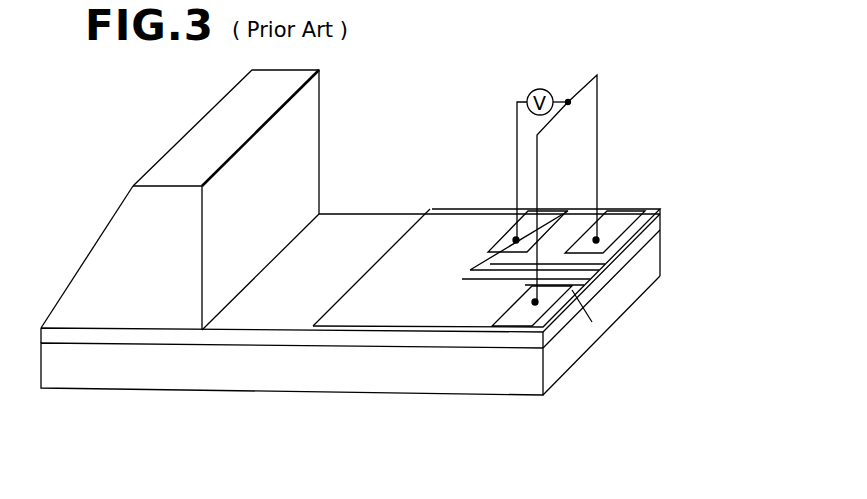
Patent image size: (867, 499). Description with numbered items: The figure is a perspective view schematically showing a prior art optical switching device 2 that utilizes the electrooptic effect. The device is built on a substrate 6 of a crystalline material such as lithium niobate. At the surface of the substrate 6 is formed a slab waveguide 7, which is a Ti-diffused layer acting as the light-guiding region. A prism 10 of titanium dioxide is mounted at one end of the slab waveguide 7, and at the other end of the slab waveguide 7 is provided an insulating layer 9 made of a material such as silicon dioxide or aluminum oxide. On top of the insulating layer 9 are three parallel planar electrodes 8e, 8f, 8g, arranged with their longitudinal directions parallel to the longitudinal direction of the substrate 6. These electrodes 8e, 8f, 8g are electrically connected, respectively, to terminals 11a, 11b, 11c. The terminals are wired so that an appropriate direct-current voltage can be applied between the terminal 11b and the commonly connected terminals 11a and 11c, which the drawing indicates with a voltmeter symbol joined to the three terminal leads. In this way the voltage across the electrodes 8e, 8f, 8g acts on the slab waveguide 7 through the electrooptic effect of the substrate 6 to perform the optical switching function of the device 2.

The optical switching device 2 is at (521, 432).
The substrate 6 is at (303, 383).
The slab waveguide 7 is at (250, 327).
The planar electrode 8e is at (580, 305).
The planar electrode 8f is at (592, 282).
The planar electrode 8g is at (600, 263).
The insulating layer 9 is at (476, 209).
The prism 10 is at (70, 285).
The terminal 11a is at (509, 311).
The terminal 11b is at (552, 211).
The terminal 11c is at (622, 211).